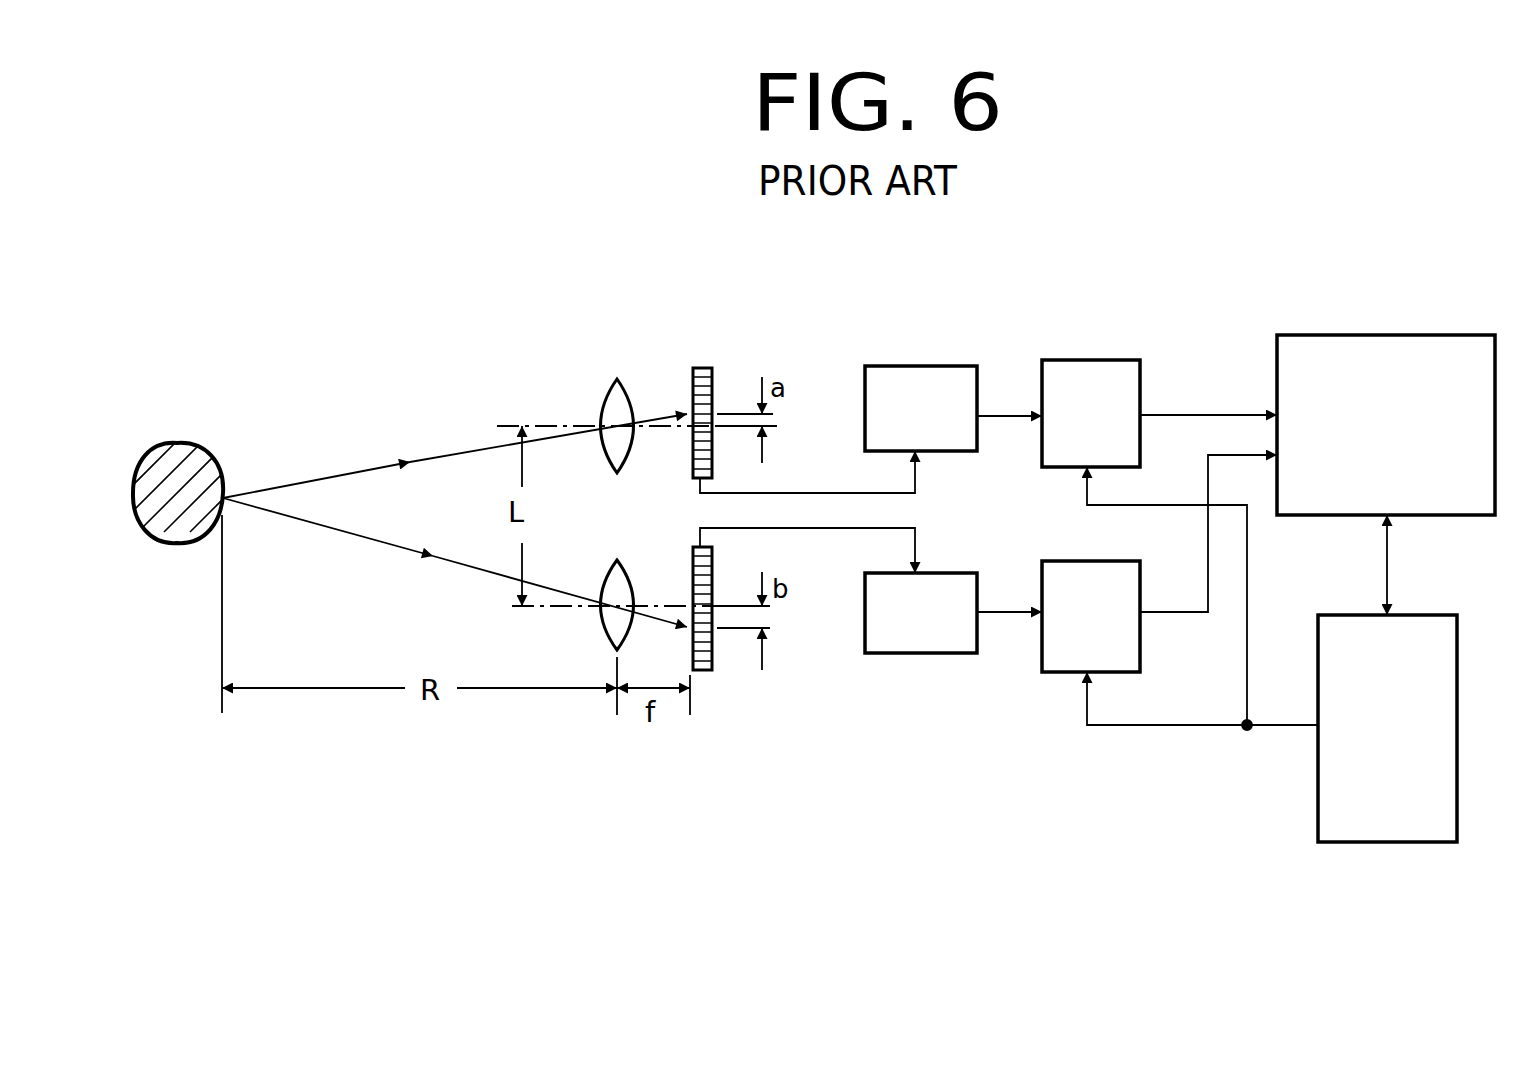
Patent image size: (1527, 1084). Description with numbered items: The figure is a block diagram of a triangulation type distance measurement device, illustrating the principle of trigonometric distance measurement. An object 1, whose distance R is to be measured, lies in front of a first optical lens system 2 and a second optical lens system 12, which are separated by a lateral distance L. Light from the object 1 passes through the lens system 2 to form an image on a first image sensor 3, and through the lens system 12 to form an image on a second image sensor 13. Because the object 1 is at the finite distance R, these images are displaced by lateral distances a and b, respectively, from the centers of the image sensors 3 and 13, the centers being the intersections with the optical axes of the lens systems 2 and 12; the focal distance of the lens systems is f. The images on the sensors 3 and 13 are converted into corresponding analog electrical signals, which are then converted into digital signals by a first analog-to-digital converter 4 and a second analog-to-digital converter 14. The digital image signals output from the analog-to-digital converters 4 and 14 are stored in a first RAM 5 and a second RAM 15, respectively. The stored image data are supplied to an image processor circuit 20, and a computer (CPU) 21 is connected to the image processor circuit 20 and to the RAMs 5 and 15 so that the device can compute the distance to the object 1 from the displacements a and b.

The object 1 is at (205, 445).
The first optical lens system 2 is at (606, 402).
The first image sensor 3 is at (700, 368).
The first analog-to-digital converter 4 is at (918, 366).
The first RAM 5 is at (1096, 360).
The second optical lens system 12 is at (606, 580).
The second image sensor 13 is at (692, 562).
The second analog-to-digital converter 14 is at (900, 653).
The second RAM 15 is at (1065, 672).
The image processor circuit 20 is at (1302, 335).
The computer (CPU) 21 is at (1318, 797).